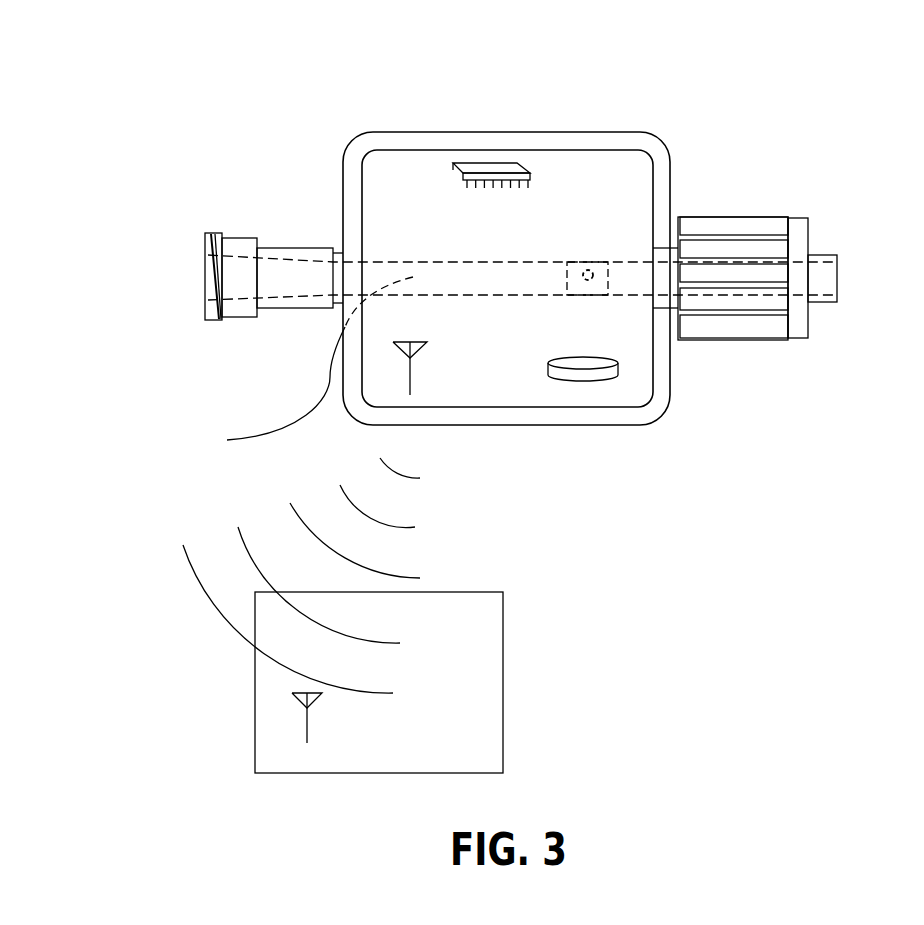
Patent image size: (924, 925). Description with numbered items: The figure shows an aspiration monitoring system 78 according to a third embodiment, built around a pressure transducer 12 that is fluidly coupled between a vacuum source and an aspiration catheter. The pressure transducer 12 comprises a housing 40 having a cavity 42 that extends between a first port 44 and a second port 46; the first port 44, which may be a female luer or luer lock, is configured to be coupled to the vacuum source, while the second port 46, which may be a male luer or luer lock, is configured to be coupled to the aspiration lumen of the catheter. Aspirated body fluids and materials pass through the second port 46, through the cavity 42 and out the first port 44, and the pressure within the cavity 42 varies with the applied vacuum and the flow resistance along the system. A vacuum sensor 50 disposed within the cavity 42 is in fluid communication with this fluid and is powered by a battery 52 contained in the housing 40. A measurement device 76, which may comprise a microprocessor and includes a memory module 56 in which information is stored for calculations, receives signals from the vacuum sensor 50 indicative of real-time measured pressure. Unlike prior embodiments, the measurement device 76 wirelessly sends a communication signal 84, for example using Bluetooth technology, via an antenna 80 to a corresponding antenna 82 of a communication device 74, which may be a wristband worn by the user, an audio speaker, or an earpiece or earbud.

The pressure transducer 12 is at (588, 132).
The housing 40 is at (523, 427).
The cavity 42 is at (513, 357).
The first port 44 is at (207, 323).
The second port 46 is at (823, 302).
The vacuum sensor 50 is at (593, 280).
The battery 52 is at (620, 377).
The memory module 56 is at (505, 167).
The communication device 74 is at (417, 592).
The measurement device 76 is at (520, 155).
The aspiration monitoring system 78 is at (308, 82).
The antenna 80 is at (407, 367).
The antenna 82 is at (307, 708).
The communication signal 84 is at (172, 547).